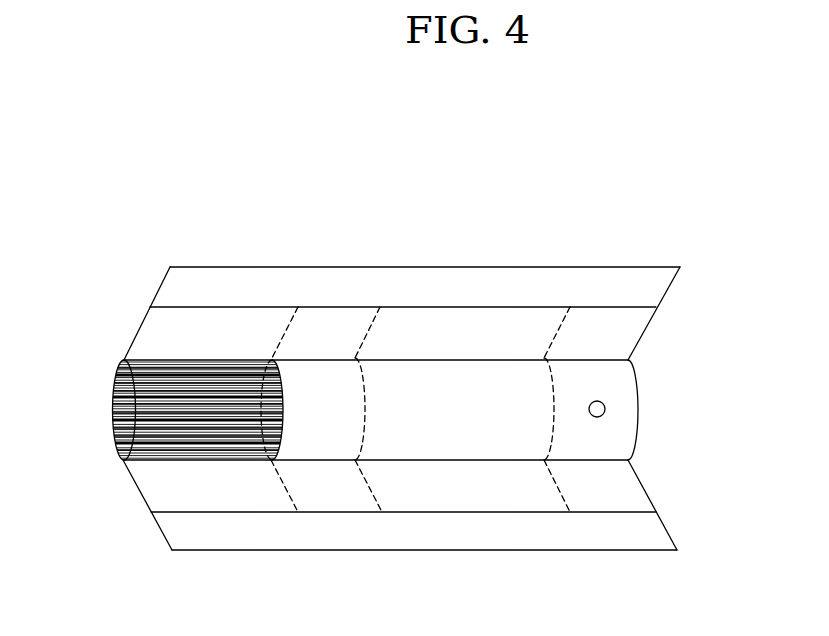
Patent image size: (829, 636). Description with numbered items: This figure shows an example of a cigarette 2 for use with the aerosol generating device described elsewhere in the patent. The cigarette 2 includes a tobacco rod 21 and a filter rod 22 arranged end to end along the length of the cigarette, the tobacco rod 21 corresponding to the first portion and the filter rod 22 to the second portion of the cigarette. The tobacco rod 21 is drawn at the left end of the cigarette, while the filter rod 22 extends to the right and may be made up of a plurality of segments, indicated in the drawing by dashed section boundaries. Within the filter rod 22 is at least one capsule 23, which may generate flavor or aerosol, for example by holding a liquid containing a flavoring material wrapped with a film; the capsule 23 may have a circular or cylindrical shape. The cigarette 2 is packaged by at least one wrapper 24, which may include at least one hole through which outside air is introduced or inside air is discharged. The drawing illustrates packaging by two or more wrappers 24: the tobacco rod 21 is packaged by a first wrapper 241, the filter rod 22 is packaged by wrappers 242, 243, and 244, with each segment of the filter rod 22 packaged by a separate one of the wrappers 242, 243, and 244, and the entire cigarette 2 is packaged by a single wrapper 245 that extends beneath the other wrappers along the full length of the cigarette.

The cigarette 2 is at (384, 394).
The tobacco rod 21 is at (123, 412).
The filter rod 22 is at (440, 375).
The capsule 23 is at (605, 409).
The wrapper 24 is at (414, 535).
The first wrapper 241 is at (217, 493).
The wrapper 242 is at (330, 495).
The wrapper 243 is at (470, 495).
The wrapper 244 is at (607, 495).
The single wrapper 245 is at (553, 543).